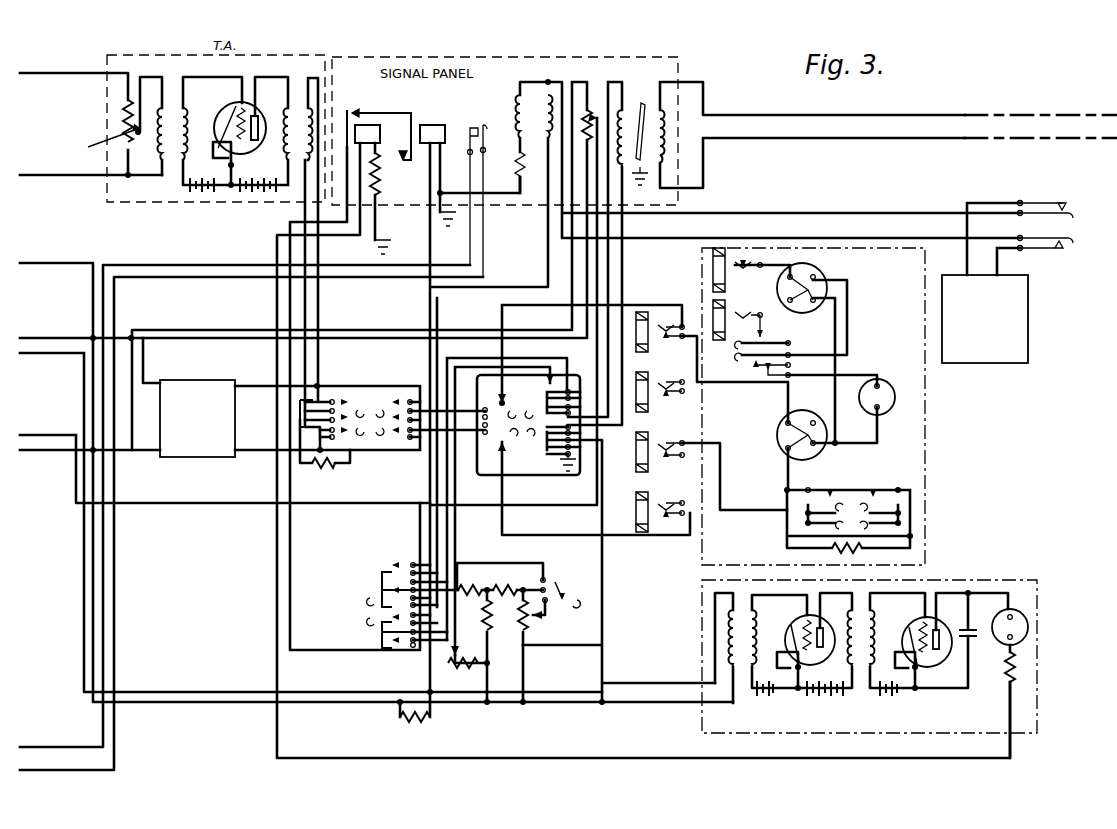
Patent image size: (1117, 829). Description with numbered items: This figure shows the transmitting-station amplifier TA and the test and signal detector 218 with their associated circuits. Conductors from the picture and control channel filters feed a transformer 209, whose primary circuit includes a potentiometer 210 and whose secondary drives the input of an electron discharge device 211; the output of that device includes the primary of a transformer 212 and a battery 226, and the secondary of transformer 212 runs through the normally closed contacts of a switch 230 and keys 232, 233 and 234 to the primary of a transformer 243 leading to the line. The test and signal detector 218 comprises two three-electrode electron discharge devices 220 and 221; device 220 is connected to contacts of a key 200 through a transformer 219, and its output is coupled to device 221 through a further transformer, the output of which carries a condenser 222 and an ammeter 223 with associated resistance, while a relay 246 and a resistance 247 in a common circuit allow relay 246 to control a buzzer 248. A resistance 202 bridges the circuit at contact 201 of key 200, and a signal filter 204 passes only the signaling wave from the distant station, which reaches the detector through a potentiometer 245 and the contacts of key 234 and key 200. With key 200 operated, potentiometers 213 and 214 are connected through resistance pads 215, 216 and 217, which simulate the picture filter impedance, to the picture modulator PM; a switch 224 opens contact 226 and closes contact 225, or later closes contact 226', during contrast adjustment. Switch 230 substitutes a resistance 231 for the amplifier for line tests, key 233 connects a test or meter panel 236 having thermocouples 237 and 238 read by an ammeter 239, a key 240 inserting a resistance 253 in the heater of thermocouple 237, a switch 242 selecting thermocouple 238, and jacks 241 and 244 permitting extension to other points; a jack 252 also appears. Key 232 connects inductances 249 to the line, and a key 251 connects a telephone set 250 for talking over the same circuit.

The key 200 is at (382, 620).
The contact 201 is at (382, 593).
The resistance 202 is at (427, 718).
The signal filter 204 is at (222, 460).
The transformer 209 is at (172, 97).
The potentiometer 210 is at (97, 128).
The electron discharge device 211 is at (236, 110).
The transformer 212 is at (297, 96).
The potentiometer 213 is at (437, 674).
The potentiometer 214 is at (528, 638).
The resistance pad 215 is at (486, 588).
The resistance pad 216 is at (494, 588).
The resistance pad 217 is at (490, 640).
The test and signal detector 218 is at (946, 582).
The transformer 219 is at (753, 675).
The electron discharge device 220 is at (803, 618).
The electron discharge device 221 is at (918, 620).
The condenser 222 is at (965, 638).
The ammeter 223 is at (1029, 623).
The switch 224 is at (552, 608).
The contact 225 is at (570, 601).
The battery 226 is at (233, 204).
The contact 226' is at (564, 584).
The switch 230 is at (350, 396).
The resistance 231 is at (318, 466).
The key 232 is at (382, 398).
The key 233 is at (514, 438).
The key 234 is at (514, 418).
The test or meter panel 236 is at (844, 452).
The thermocouple 237 is at (790, 422).
The thermocouple 238 is at (846, 292).
The ammeter 239 is at (908, 368).
The key 240 is at (848, 501).
The jack 241 is at (650, 400).
The switch 242 is at (774, 340).
The transformer 243 is at (641, 102).
The jack 244 is at (713, 297).
The potentiometer 245 is at (592, 105).
The relay 246 is at (354, 118).
The resistance 247 is at (380, 175).
The buzzer 248 is at (435, 125).
The inductances 249 is at (530, 100).
The telephone set 250 is at (1000, 360).
The key 251 is at (1040, 250).
The jack 252 is at (481, 128).
The resistance 253 is at (829, 550).